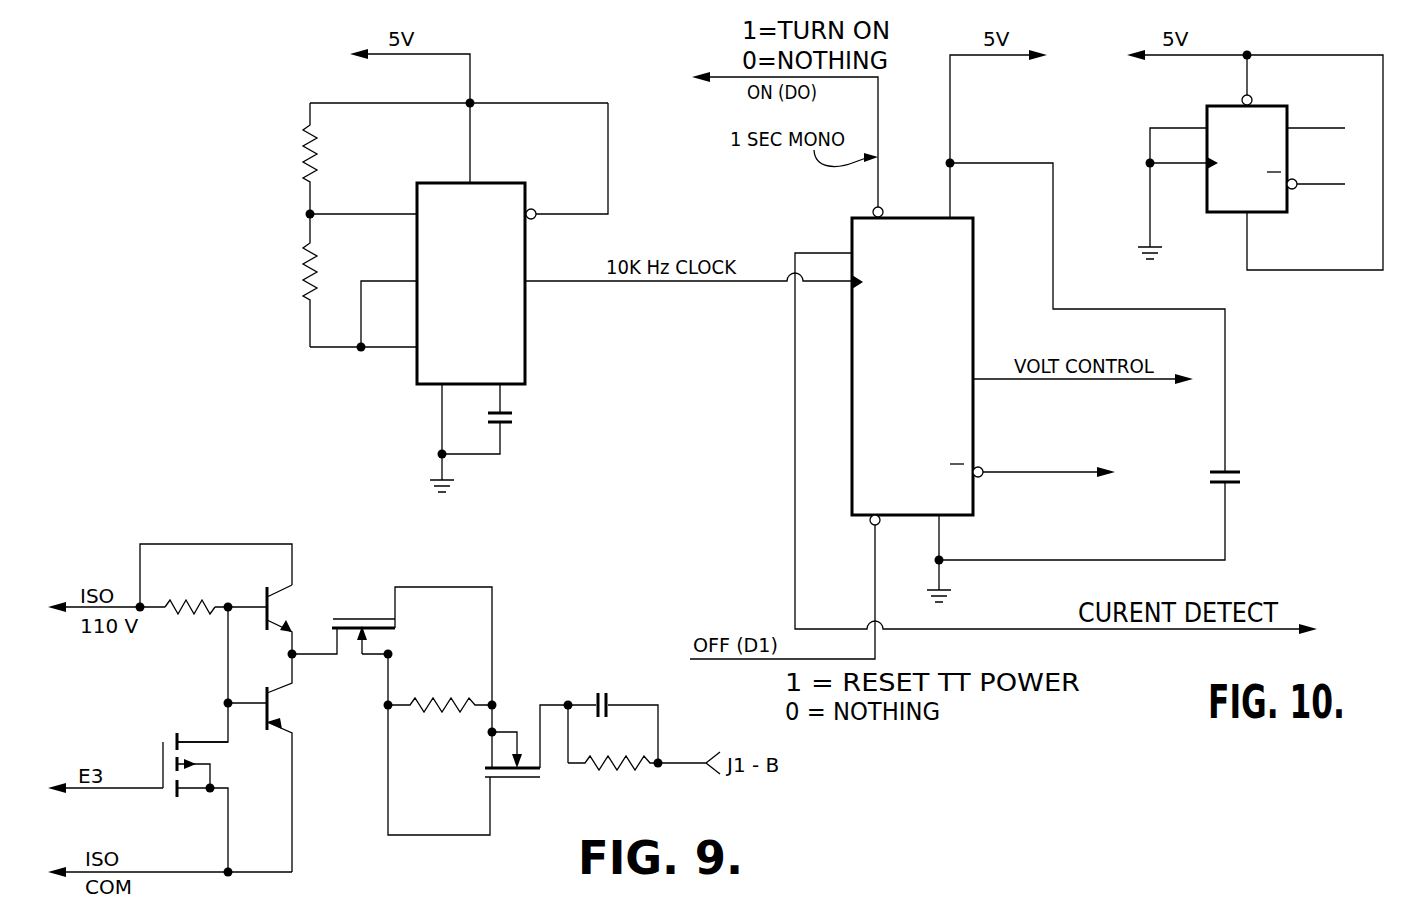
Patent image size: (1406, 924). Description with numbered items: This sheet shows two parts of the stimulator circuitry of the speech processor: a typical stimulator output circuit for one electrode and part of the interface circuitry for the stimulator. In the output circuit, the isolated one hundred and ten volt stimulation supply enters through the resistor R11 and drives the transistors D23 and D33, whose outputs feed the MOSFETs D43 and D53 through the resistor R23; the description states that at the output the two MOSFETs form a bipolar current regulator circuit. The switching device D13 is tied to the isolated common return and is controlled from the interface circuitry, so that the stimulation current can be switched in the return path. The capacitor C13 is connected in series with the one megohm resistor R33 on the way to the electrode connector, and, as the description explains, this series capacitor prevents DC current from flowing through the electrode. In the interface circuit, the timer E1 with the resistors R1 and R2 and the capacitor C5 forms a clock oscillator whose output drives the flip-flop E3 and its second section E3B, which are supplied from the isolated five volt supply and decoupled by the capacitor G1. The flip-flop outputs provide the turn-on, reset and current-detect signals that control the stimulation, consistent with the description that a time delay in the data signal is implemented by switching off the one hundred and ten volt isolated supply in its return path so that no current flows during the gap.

In FIG. 10, the resistor R1 5M R1 is at (330, 158).
In FIG. 10, the resistor R2 5M R2 is at (291, 280).
In FIG. 10, the 555 timer E1 is at (503, 255).
In FIG. 10, the capacitor C5 is at (505, 427).
In FIG. 10, the 74HC74 flip-flop E3:A E3 is at (913, 366).
In FIG. 10, the 74HC74 flip-flop E3:B E3B is at (1255, 149).
In FIG. 10, the capacitor G1 1n G1 is at (1106, 503).
In FIG. 9, the resistor R11 1M R11 is at (191, 605).
In FIG. 9, the transistor D23 FMMTA42 D23 is at (325, 605).
In FIG. 9, the transistor D33 FMMTA92 D33 is at (321, 763).
In FIG. 9, the MOSFET D13 B55131 D13 is at (179, 738).
In FIG. 9, the MOSFET D43 B55139 D43 is at (412, 646).
In FIG. 9, the MOSFET D53 B55139 D53 is at (484, 755).
In FIG. 9, the resistor R23 820 R23 is at (440, 707).
In FIG. 9, the capacitor C13 330n C13 is at (615, 712).
In FIG. 9, the resistor R33 1M R33 is at (613, 787).